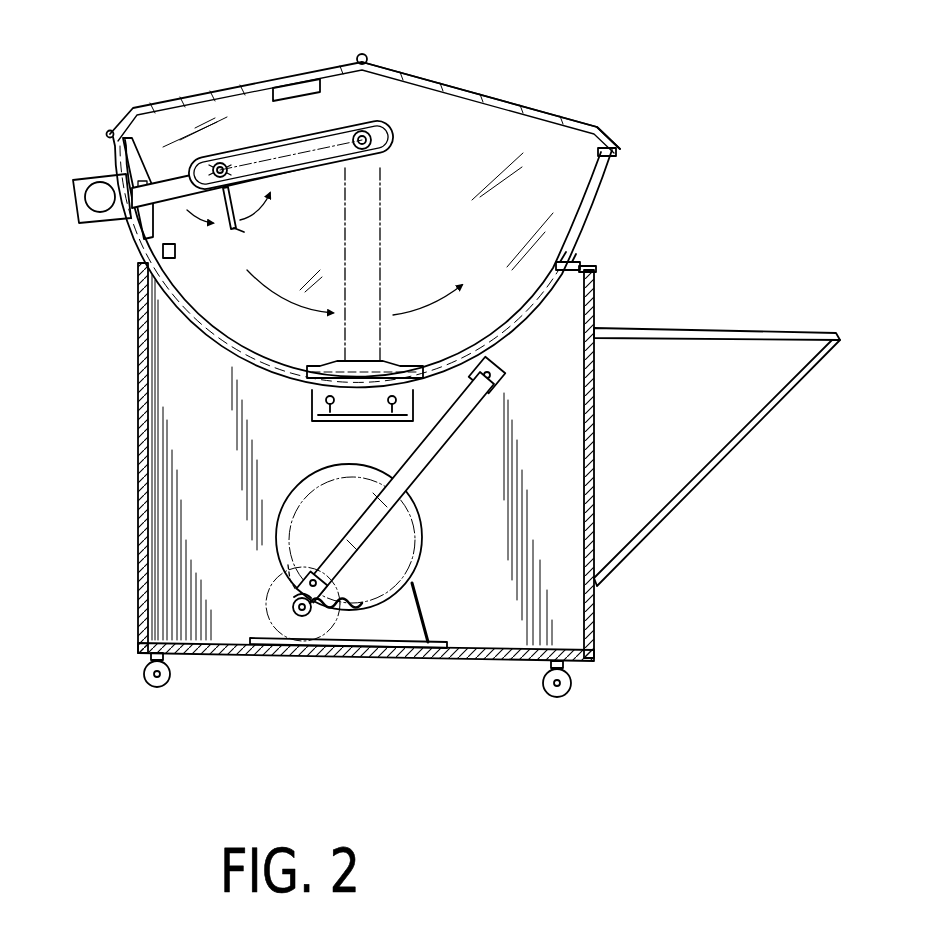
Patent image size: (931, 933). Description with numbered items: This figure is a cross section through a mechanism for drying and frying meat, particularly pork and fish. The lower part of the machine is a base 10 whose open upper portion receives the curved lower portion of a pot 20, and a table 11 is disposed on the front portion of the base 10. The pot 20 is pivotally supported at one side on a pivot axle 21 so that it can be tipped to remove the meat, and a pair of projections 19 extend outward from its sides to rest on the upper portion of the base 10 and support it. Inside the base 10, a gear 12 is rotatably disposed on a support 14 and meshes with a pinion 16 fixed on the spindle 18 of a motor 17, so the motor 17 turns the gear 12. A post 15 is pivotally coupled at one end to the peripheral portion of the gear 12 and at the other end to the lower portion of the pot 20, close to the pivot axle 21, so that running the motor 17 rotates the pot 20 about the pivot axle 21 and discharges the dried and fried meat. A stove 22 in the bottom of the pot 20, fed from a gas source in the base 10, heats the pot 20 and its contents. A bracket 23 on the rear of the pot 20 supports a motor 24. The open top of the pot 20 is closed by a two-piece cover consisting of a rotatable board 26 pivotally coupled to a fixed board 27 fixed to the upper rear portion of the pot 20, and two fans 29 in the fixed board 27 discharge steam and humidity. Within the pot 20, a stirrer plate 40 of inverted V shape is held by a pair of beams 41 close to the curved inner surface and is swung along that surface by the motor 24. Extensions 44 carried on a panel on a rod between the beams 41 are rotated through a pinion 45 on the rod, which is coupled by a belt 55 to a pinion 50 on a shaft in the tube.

The base 10 is at (138, 493).
The table 11 is at (751, 337).
The gear 12 is at (408, 538).
The support 14 is at (412, 613).
The post 15 is at (440, 433).
The pinion 16 is at (305, 604).
The motor 17 is at (275, 590).
The spindle 18 is at (300, 608).
The projections 19 is at (173, 247).
The pot 20 is at (595, 208).
The pivot axle 21 is at (600, 258).
The stove 22 is at (313, 402).
The bracket 23 is at (83, 223).
The motor 24 is at (100, 210).
The rotatable board 26 is at (520, 105).
The fixed board 27 is at (214, 97).
The fans 29 is at (308, 80).
The plate 40 is at (140, 142).
The beams 41 is at (178, 196).
The extensions 44 is at (234, 228).
The pinion 45 is at (222, 162).
The pinion 50 is at (380, 148).
The belt 55 is at (305, 132).